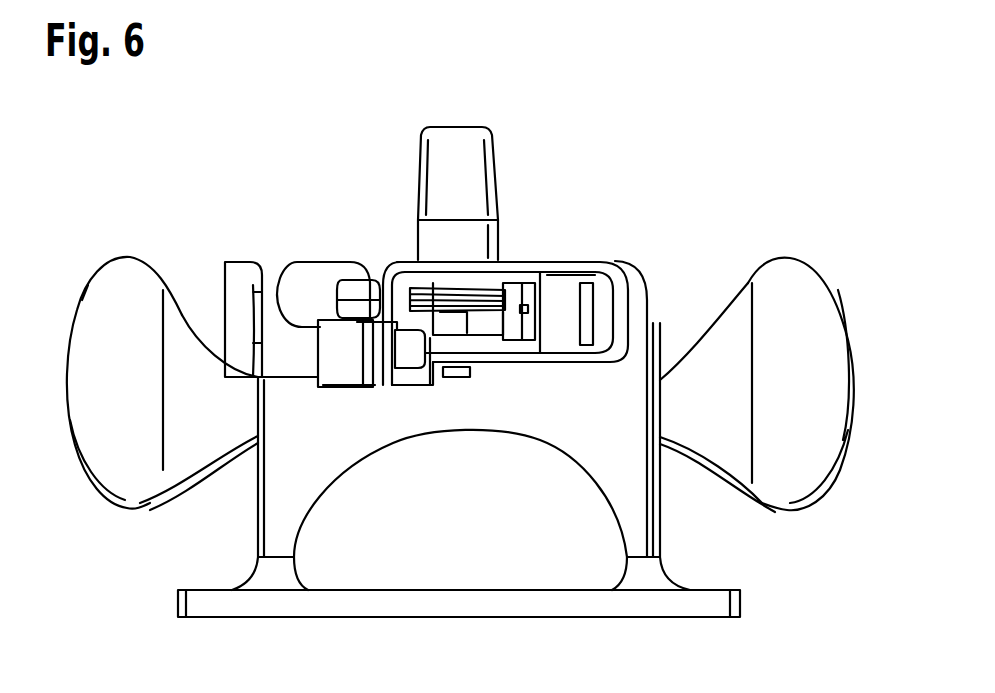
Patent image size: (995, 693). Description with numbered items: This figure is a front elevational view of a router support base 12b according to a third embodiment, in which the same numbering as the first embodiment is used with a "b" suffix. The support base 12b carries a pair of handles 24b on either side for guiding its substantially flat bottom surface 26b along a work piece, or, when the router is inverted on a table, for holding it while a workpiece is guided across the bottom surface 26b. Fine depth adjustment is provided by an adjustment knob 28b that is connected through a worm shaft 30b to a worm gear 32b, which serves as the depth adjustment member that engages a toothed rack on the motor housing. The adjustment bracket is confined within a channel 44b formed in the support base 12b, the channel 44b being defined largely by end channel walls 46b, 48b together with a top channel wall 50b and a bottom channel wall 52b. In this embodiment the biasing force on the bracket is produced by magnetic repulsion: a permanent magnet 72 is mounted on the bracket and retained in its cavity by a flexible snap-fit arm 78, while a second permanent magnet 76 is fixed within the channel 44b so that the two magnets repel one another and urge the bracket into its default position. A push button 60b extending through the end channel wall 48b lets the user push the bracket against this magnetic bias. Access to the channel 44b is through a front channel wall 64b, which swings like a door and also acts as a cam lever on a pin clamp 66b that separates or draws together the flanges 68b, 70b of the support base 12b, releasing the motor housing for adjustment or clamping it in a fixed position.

The support base 12b is at (281, 145).
The handles 24b is at (130, 270).
The bottom surface 26b is at (699, 619).
The adjustment knob 28b is at (465, 165).
The worm shaft 30b is at (468, 318).
The worm gear 32b is at (518, 284).
The channel 44b is at (545, 282).
The end channel wall 46b is at (600, 308).
The end channel wall 48b is at (383, 280).
The top channel wall 50b is at (508, 268).
The bottom channel wall 52b is at (534, 357).
The push button 60b is at (357, 288).
The front channel wall 64b is at (240, 283).
The pin clamp 66b is at (372, 355).
The flange 68b is at (395, 345).
The flange 70b is at (360, 348).
The permanent magnet 72 is at (596, 278).
The permanent magnet 76 is at (600, 330).
The snap-fit arm 78 is at (530, 318).